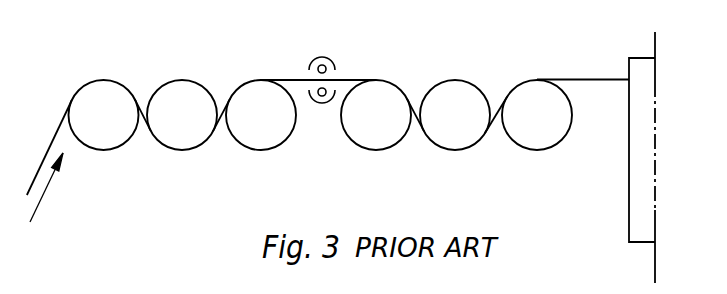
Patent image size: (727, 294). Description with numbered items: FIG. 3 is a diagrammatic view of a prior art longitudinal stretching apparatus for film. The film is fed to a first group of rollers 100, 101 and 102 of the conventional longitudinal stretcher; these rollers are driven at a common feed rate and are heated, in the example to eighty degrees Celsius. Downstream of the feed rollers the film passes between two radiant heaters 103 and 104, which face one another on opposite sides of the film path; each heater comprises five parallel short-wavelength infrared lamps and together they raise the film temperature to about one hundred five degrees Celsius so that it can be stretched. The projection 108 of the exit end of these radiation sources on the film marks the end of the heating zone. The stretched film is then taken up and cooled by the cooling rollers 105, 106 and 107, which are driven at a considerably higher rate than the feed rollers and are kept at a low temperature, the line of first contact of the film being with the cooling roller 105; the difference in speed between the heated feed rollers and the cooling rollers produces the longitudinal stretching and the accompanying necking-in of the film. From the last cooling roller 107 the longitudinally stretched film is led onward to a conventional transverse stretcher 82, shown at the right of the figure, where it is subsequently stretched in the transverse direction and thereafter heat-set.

The roller 100 is at (97, 92).
The roller 101 is at (187, 91).
The roller 102 is at (261, 92).
The radiant heater 103 is at (328, 62).
The radiant heater 104 is at (322, 96).
The cooling roller 105 is at (390, 102).
The cooling roller 106 is at (460, 98).
The cooling roller 107 is at (535, 98).
The projection of the exit end of the radiation sources 108 is at (346, 79).
The transverse stretcher 82 is at (637, 69).